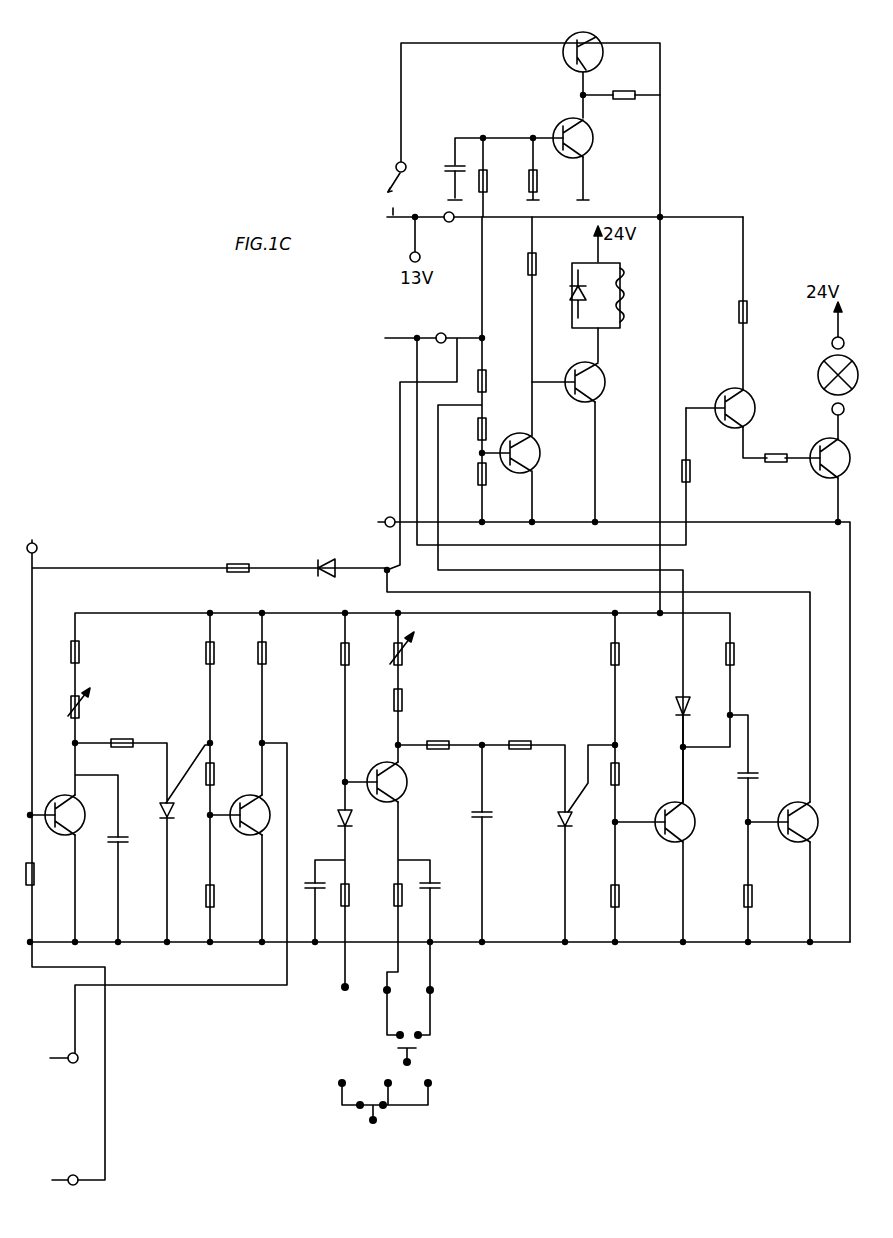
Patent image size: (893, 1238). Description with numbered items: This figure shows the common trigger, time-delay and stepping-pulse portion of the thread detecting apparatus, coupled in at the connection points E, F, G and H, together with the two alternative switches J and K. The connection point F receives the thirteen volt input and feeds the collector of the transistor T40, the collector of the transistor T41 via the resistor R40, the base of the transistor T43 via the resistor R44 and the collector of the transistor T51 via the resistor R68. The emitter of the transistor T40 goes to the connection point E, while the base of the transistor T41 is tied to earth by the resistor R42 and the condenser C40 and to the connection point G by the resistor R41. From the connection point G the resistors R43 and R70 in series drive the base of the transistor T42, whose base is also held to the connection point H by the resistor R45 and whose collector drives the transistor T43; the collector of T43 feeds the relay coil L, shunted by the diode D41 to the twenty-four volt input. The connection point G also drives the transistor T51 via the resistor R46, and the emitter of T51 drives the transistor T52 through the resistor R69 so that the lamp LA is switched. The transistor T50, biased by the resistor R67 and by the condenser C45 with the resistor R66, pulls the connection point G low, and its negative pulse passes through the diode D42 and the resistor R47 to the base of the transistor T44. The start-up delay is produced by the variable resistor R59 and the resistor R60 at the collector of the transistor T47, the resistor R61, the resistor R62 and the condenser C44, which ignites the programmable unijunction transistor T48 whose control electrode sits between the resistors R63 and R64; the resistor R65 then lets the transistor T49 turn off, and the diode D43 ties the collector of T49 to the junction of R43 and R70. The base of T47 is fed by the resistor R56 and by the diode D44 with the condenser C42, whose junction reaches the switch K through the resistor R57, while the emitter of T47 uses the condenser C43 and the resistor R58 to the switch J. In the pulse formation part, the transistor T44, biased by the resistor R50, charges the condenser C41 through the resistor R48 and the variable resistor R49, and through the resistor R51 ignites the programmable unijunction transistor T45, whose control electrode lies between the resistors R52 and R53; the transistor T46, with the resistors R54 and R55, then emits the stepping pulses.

The transistor T40 is at (590, 38).
The resistor R40 is at (621, 82).
The transistor T41 is at (590, 145).
The condenser C40 is at (449, 157).
The resistor R41 is at (488, 181).
The resistor R42 is at (538, 181).
The resistor R44 is at (537, 264).
The diode D41 is at (597, 295).
The relay coil L is at (624, 292).
The resistor R43 is at (500, 381).
The resistor R70 is at (500, 429).
The resistor R45 is at (500, 483).
The transistor T42 is at (535, 462).
The transistor T43 is at (600, 392).
The resistor R68 is at (748, 312).
The lamp LA is at (819, 376).
The transistor T51 is at (750, 414).
The resistor R69 is at (778, 448).
The transistor T52 is at (840, 478).
The resistor R46 is at (704, 471).
The resistor R47 is at (230, 562).
The diode D42 is at (330, 556).
The resistor R48 is at (97, 652).
The variable resistor R49 is at (98, 703).
The resistor R51 is at (135, 740).
The resistor R50 is at (49, 874).
The transistor T44 is at (80, 822).
The condenser C41 is at (130, 828).
The programmable unijunction transistor T45 is at (176, 812).
The resistor R52 is at (215, 653).
The resistor R55 is at (267, 653).
The resistor R53 is at (229, 774).
The resistor R54 is at (228, 896).
The transistor T46 is at (245, 833).
The resistor R56 is at (350, 654).
The variable resistor R59 is at (422, 649).
The resistor R60 is at (419, 700).
The resistor R61 is at (438, 734).
The resistor R62 is at (526, 734).
The transistor T47 is at (402, 778).
The diode D44 is at (364, 820).
The condenser C42 is at (317, 874).
The condenser C43 is at (435, 874).
The resistor R57 is at (363, 894).
The resistor R58 is at (394, 906).
The condenser C44 is at (485, 800).
The programmable unijunction transistor T48 is at (574, 818).
The resistor R63 is at (636, 654).
The resistor R64 is at (635, 774).
The resistor R65 is at (635, 896).
The transistor T49 is at (690, 812).
The diode D43 is at (699, 720).
The resistor R66 is at (752, 654).
The condenser C45 is at (762, 765).
The resistor R67 is at (769, 896).
The transistor T50 is at (815, 830).
The switch J is at (432, 1013).
The switch K is at (340, 1092).
The connection point E is at (388, 169).
The connection point F is at (420, 235).
The connection point G is at (406, 336).
The connection point H is at (381, 515).